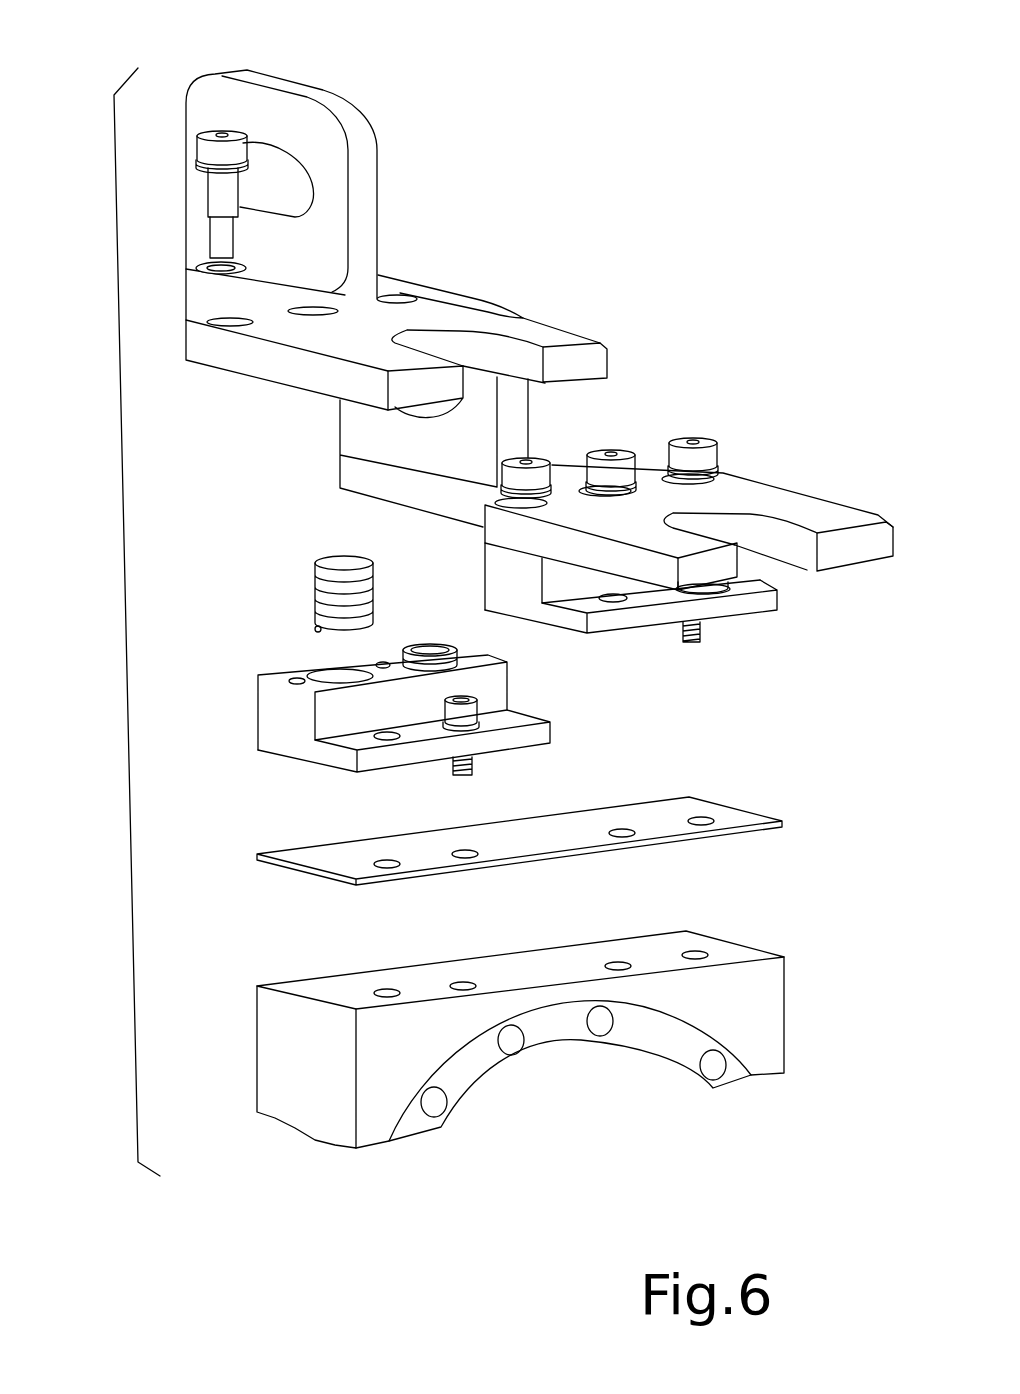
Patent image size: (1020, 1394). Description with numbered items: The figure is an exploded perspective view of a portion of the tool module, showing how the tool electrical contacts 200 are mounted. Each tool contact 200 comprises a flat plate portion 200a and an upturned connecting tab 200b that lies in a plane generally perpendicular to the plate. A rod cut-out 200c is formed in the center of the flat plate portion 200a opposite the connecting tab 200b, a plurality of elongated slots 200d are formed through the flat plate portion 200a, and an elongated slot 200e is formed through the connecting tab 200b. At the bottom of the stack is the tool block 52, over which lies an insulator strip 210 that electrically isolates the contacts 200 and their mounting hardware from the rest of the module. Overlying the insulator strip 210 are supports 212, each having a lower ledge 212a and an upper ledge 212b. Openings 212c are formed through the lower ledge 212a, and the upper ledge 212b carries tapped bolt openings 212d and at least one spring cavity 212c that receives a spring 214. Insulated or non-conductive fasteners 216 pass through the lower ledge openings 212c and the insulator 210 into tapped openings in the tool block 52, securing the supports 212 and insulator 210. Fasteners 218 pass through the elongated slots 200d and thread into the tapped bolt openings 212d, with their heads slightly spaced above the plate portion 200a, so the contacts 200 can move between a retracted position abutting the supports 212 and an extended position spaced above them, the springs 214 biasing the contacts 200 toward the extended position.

The tool block 52 is at (746, 941).
The tool electrical contacts 200 is at (668, 199).
The flat plate portion 200a is at (330, 343).
The connecting tab 200b is at (358, 107).
The rod cut-out 200c is at (780, 523).
The elongated slots 200d is at (205, 318).
The elongated slot 200e is at (313, 193).
The insulator strip 210 is at (711, 806).
The supports 212 is at (222, 755).
The lower ledge 212a is at (763, 580).
The upper ledge 212b is at (500, 654).
The openings 212c is at (630, 598).
The tapped bolt openings 212d is at (383, 663).
The springs 214 is at (313, 570).
The fasteners 216 is at (700, 630).
The fasteners 218 is at (205, 148).